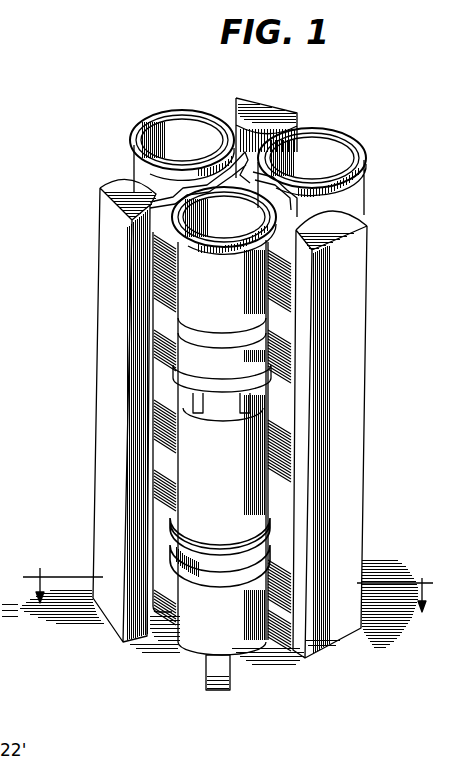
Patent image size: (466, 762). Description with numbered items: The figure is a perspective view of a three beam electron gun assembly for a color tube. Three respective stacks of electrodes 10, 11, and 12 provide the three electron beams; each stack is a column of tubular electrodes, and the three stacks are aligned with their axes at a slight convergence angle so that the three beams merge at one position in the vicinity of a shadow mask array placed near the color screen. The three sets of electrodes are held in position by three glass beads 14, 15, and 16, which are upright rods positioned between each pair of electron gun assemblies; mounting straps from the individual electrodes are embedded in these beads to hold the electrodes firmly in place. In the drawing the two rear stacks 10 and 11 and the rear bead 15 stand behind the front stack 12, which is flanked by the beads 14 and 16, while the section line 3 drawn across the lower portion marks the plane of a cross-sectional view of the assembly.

The stack of electrodes 10 is at (154, 112).
The stack of electrodes 11 is at (320, 160).
The stack of electrodes 12 is at (190, 665).
The glass bead 14 is at (107, 187).
The glass bead 15 is at (273, 104).
The glass bead 16 is at (365, 292).
The section line 3- 3 is at (231, 582).